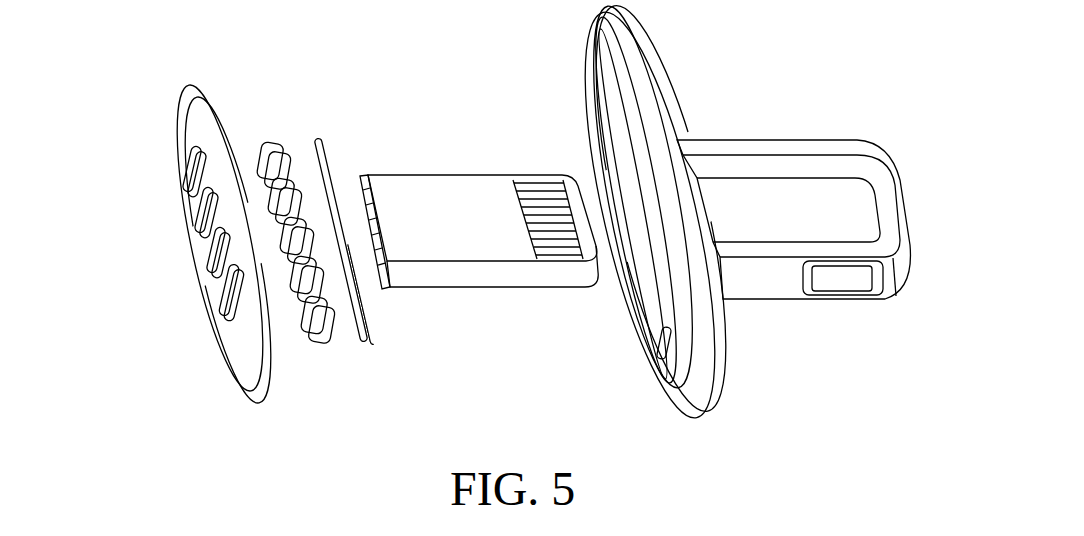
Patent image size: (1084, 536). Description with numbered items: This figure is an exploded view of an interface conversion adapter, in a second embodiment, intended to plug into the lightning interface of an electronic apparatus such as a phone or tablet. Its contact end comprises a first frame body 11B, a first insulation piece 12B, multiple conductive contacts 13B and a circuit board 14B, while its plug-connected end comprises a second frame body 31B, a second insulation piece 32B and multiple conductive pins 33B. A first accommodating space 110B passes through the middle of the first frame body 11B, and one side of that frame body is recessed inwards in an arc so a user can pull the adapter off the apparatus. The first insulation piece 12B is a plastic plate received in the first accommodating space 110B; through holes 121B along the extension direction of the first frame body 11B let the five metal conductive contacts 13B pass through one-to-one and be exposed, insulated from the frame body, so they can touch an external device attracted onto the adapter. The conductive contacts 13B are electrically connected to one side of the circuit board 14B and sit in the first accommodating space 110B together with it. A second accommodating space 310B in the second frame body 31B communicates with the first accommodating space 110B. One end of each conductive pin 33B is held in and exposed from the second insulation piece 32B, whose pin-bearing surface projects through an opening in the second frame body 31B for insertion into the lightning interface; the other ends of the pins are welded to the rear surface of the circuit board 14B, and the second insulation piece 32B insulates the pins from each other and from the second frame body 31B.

The first frame body 11B is at (595, 87).
The first insulation piece 12B is at (248, 360).
The through holes 121B is at (198, 207).
The conductive contacts 13B is at (312, 323).
The circuit board 14B is at (320, 163).
The second insulation piece 32B is at (473, 240).
The conductive pins 33B is at (362, 178).
The first accommodating space 110B is at (663, 333).
The second frame body 31B is at (745, 273).
The second accommodating space 310B is at (760, 207).